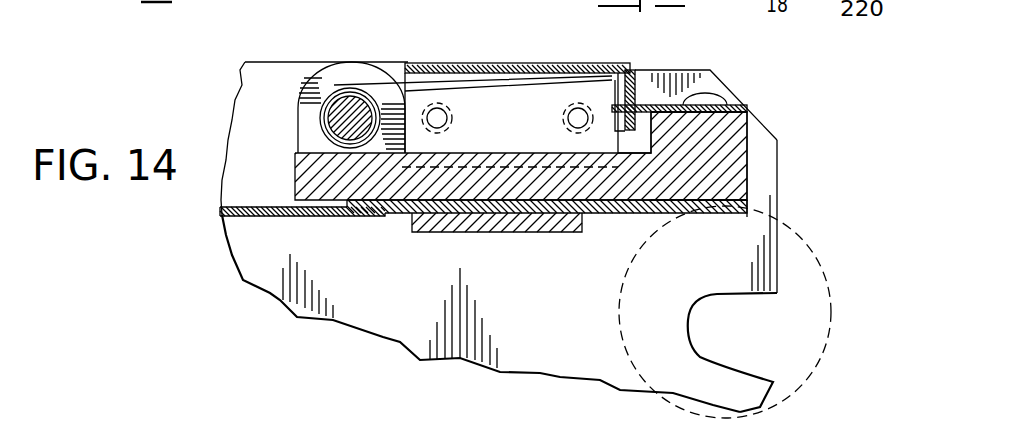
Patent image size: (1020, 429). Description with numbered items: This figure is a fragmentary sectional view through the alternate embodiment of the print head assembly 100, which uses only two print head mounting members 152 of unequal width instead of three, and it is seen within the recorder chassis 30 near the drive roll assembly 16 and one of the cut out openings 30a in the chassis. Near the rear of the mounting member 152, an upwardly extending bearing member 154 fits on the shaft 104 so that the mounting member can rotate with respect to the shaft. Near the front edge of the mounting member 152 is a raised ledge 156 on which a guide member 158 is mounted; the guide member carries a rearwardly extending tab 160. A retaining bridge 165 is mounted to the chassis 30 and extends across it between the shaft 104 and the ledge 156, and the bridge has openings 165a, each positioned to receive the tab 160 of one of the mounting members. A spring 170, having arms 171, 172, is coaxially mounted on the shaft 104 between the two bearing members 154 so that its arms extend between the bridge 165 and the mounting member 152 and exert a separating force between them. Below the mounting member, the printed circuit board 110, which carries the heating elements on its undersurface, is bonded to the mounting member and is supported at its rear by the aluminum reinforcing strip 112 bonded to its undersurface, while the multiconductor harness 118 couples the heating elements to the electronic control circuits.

The drive roll assembly 16 is at (823, 266).
The chassis 30 is at (497, 325).
The cut out opening 30a is at (757, 295).
The print head assembly 100 is at (462, 50).
The shaft 104 is at (340, 122).
The printed circuit board 110 is at (665, 214).
The reinforcing strip 112 is at (480, 233).
The multiconductor harness 118 is at (250, 217).
The print head mounting member 152 is at (330, 50).
The bearing member 154 is at (350, 68).
The raised ledge 156 is at (735, 128).
The guide member 158 is at (734, 92).
The tab 160 is at (612, 107).
The retaining bridge 165 is at (500, 68).
The opening 165a is at (640, 71).
The spring 170 is at (306, 110).
The spring arm 171 is at (478, 86).
The spring arm 172 is at (478, 152).